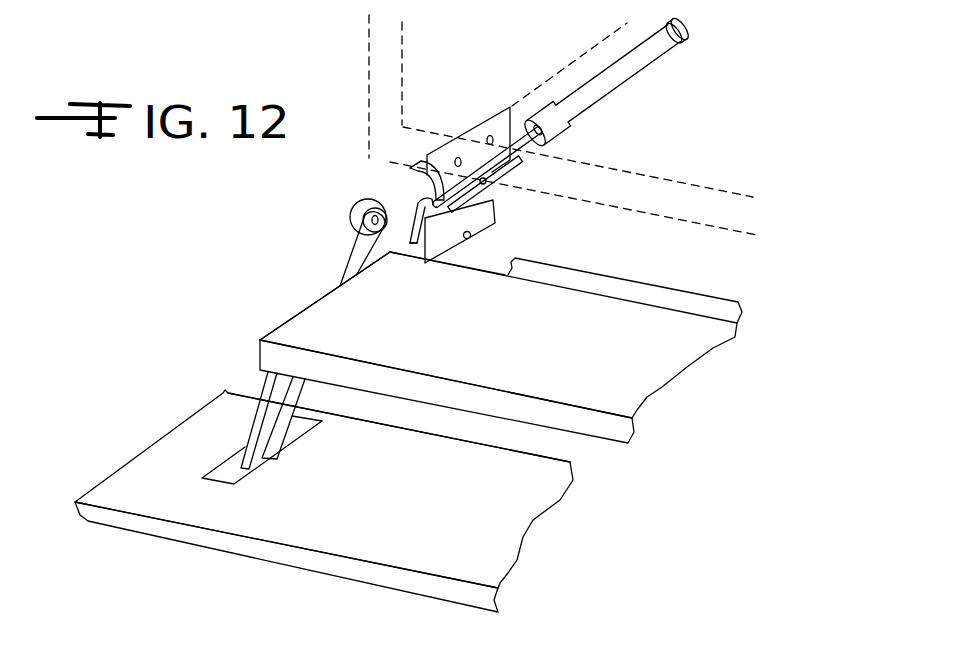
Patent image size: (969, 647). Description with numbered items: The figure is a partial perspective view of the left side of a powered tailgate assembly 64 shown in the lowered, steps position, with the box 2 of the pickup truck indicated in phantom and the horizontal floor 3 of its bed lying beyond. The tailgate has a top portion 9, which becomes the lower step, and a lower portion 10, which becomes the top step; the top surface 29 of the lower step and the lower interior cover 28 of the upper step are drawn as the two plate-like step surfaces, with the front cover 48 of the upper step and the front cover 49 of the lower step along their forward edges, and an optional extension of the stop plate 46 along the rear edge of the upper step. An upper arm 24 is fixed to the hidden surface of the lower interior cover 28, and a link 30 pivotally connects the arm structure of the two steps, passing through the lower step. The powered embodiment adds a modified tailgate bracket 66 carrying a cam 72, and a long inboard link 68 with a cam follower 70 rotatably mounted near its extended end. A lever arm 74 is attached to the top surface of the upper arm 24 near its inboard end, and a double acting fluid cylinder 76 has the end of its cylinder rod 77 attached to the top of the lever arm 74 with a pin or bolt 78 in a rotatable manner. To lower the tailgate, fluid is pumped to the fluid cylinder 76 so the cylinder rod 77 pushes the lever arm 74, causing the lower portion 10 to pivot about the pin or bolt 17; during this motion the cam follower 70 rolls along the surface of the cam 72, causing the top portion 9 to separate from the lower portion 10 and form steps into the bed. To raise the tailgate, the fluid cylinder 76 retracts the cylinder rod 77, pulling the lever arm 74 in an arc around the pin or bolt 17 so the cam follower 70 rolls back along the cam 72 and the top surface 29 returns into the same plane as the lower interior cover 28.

The box 2 is at (372, 92).
The floor 3 is at (680, 142).
The top portion 9 is at (503, 577).
The lower portion 10 is at (660, 385).
The pin or bolt 17 is at (473, 233).
The upper arm 24 is at (480, 225).
The lower interior cover 28 is at (521, 352).
The top surface of the lower step 29 is at (362, 518).
The link 30 is at (283, 395).
The extension of the stop plate 46 is at (632, 305).
The front cover of the upper step 48 is at (414, 401).
The front cover of the lower step 49 is at (260, 548).
The powered tailgate assembly 64 is at (292, 318).
The tailgate bracket 66 is at (473, 147).
The long inboard link 68 is at (360, 253).
The cam follower 70 is at (364, 204).
The cam 72 is at (428, 160).
The lever arm 74 is at (412, 232).
The fluid cylinder 76 is at (612, 85).
The cylinder rod 77 is at (480, 189).
The pin or bolt 78 is at (423, 180).